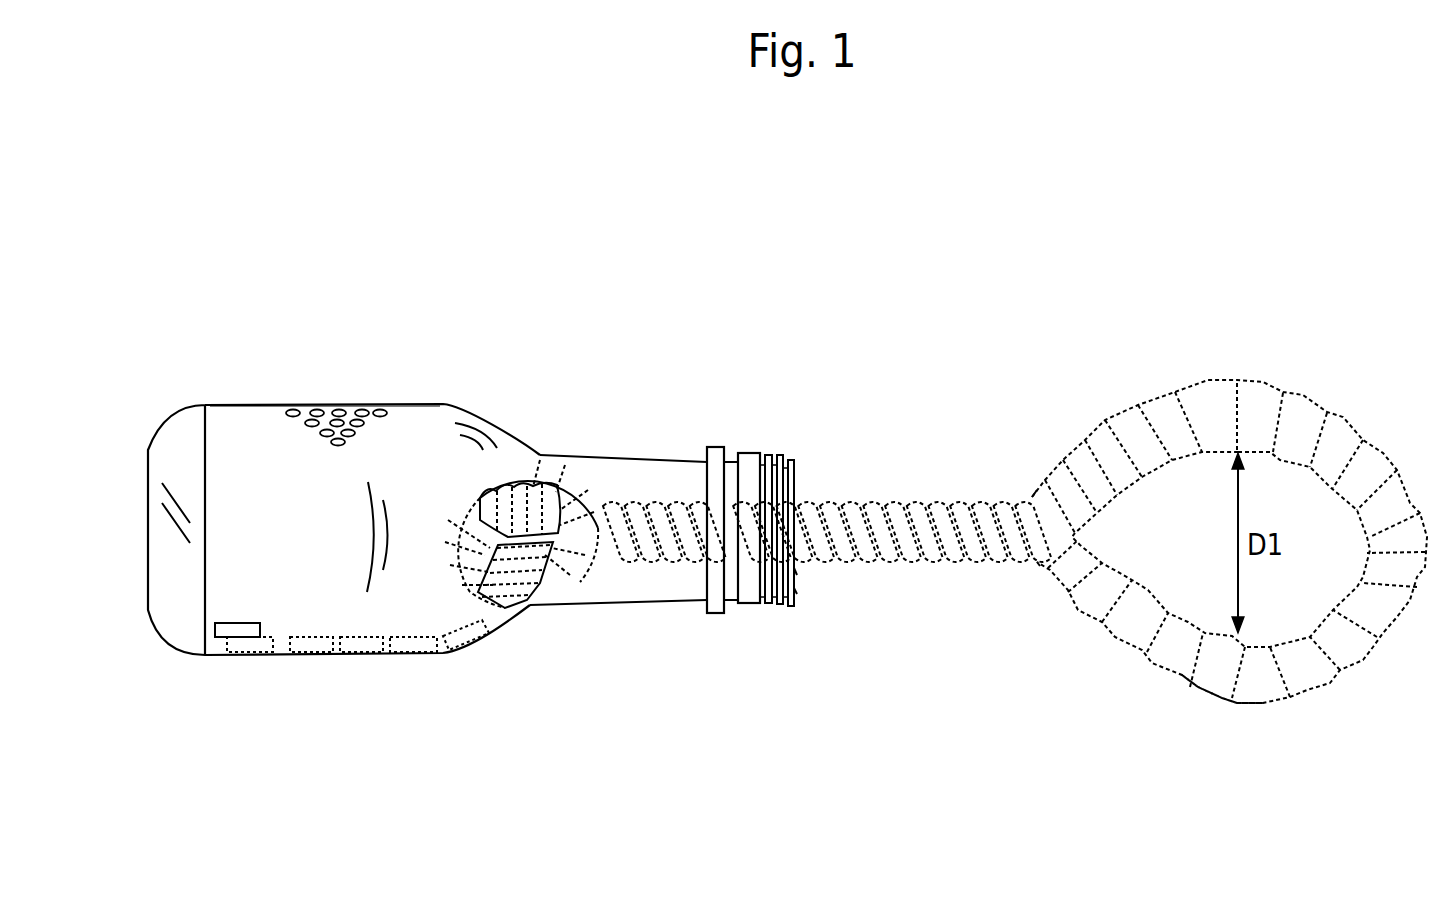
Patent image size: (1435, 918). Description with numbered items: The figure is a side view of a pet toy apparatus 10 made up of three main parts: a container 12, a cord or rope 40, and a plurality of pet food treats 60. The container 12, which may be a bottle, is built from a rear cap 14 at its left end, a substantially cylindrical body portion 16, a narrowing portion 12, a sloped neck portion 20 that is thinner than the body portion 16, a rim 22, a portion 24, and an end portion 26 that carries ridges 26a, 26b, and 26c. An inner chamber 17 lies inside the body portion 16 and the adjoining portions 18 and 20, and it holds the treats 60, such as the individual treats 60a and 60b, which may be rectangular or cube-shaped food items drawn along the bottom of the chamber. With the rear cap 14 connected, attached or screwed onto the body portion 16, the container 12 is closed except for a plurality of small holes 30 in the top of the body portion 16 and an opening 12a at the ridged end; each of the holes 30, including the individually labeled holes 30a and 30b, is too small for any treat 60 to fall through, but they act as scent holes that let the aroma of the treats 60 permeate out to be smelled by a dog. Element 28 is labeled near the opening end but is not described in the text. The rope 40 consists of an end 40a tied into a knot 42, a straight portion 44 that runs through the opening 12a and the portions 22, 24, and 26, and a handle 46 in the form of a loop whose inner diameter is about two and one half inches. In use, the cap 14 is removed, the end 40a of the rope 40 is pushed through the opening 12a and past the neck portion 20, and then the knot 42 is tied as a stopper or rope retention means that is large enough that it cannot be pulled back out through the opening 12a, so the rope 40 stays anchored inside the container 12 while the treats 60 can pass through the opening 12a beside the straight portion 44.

The apparatus 10 is at (1045, 397).
The container 12 is at (462, 400).
The opening 12a is at (797, 572).
The rear cap 14 is at (183, 413).
The body portion 16 is at (265, 422).
The inner chamber 17 is at (287, 562).
The portion 18 is at (517, 420).
The sloped neck portion 20 is at (630, 453).
The rim 22 is at (708, 450).
The portion 24 is at (733, 453).
The portion 26 is at (748, 453).
The ridge 26a is at (763, 453).
The ridge 26b is at (779, 452).
The ridge 26c is at (789, 455).
The retaining member 28 is at (797, 590).
The small holes 30 is at (327, 398).
The hole 30a is at (363, 407).
The hole 30b is at (385, 400).
The rope 40 is at (1237, 360).
The end of the rope 40a is at (500, 607).
The knot 42 is at (583, 587).
The straight portion 44 is at (648, 570).
The handle 46 is at (1210, 703).
The treats 60 is at (345, 665).
The treat 60a is at (472, 645).
The treat 60b is at (412, 658).